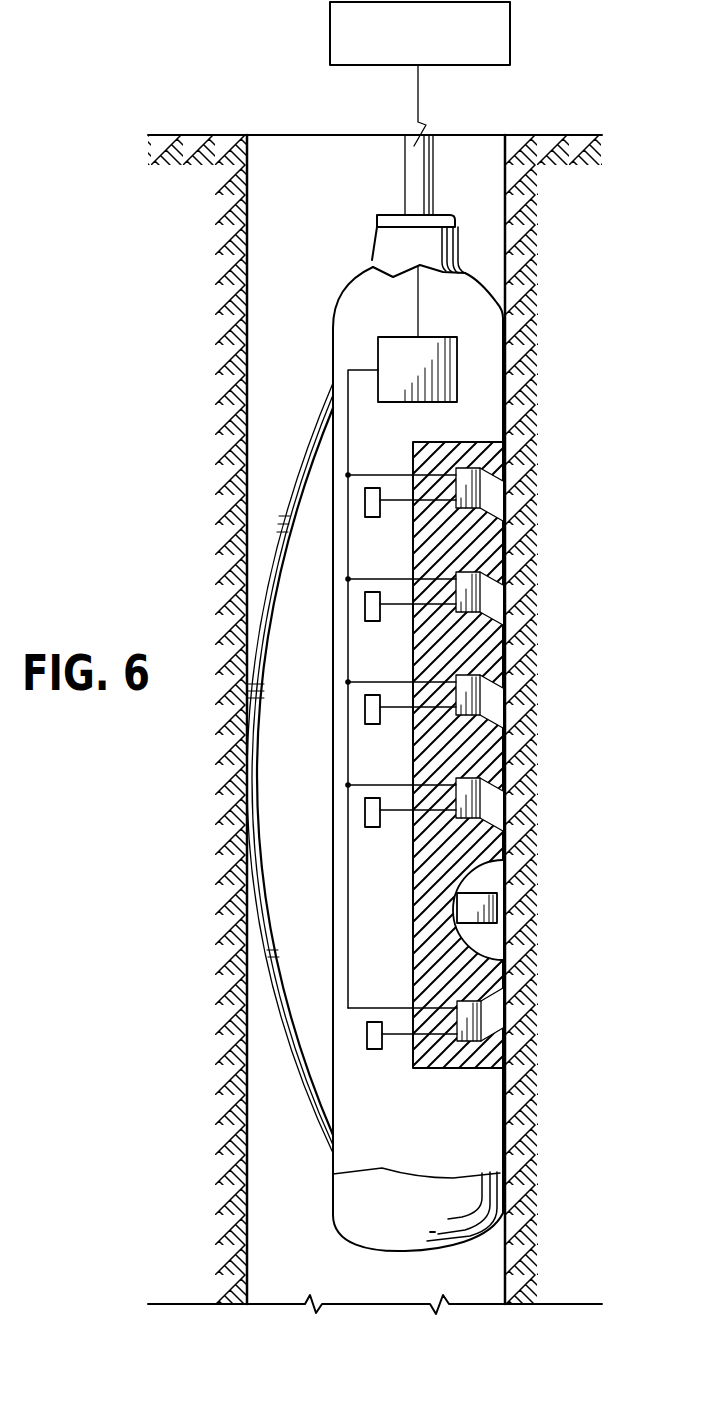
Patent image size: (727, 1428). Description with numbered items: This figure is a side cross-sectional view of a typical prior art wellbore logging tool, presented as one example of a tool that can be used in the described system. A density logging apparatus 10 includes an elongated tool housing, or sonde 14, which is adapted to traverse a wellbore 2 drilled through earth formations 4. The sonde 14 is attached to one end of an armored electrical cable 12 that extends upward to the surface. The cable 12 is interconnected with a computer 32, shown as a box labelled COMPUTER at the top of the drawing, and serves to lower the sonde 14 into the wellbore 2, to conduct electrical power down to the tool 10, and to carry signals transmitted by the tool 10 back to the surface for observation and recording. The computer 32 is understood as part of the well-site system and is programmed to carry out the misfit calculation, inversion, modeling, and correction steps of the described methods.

The computer 32 is at (510, 33).
The armored electrical cable 12 is at (418, 98).
The density logging apparatus 10 is at (375, 722).
The tool housing (sonde) 14 is at (366, 232).
The wellbore 2 is at (502, 236).
The earth formations 4 is at (537, 307).